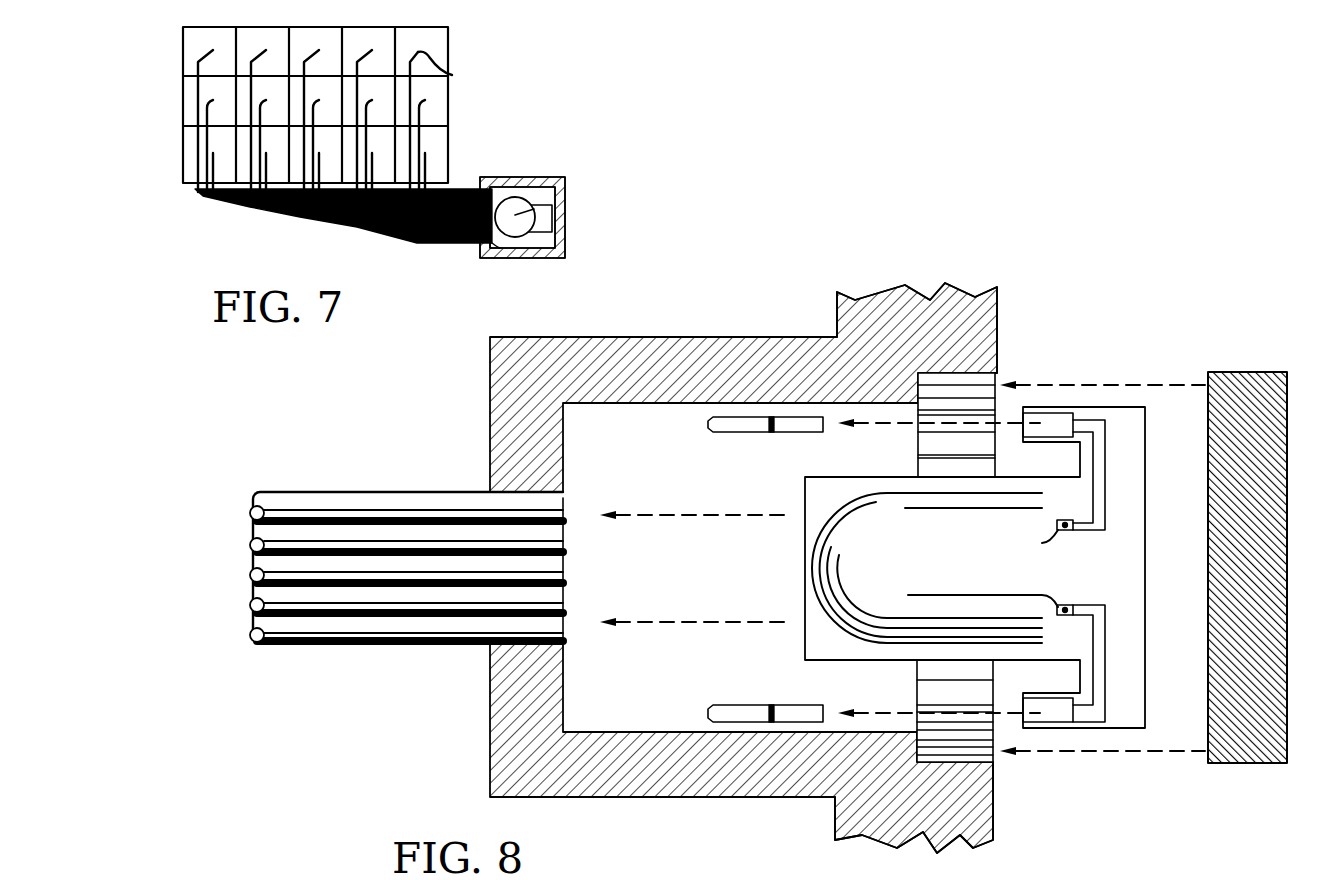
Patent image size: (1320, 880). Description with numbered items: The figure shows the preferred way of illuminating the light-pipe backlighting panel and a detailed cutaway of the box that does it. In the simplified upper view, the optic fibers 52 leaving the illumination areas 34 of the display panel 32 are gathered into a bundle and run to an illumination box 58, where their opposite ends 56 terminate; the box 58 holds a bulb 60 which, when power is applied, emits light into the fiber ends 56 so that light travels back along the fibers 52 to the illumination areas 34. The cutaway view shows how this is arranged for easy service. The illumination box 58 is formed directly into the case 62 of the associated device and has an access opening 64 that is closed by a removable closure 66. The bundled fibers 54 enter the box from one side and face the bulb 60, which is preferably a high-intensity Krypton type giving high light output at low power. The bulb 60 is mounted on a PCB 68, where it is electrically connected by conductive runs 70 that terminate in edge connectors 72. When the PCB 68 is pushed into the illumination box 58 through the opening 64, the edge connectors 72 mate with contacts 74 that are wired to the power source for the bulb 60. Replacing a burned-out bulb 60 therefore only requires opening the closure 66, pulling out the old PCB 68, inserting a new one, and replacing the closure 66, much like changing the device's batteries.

In FIG. 7, the sensor array substrate 32 is at (452, 141).
In FIG. 7, the illumination area 34 is at (362, 121).
In FIG. 7, the optic fibers 52 is at (385, 232).
In FIG. 8, the optic fibers 52 is at (340, 500).
In FIG. 7, the optical fibers 54 is at (452, 75).
In FIG. 8, the optical fibers 54 is at (567, 597).
In FIG. 7, the opposite ends 56 is at (500, 256).
In FIG. 7, the illumination box 58 is at (535, 178).
In FIG. 8, the illumination box 58 is at (718, 331).
In FIG. 7, the bulb 60 is at (555, 205).
In FIG. 8, the bulb 60 is at (852, 572).
In FIG. 8, the case 62 is at (877, 300).
In FIG. 8, the access opening 64 is at (1000, 373).
In FIG. 8, the removable closure 66 is at (1245, 372).
In FIG. 8, the PCB 68 is at (1130, 527).
In FIG. 8, the conductive runs 70 is at (1100, 482).
In FIG. 8, the edge connectors 72 is at (1050, 421).
In FIG. 8, the contacts 74 is at (788, 426).